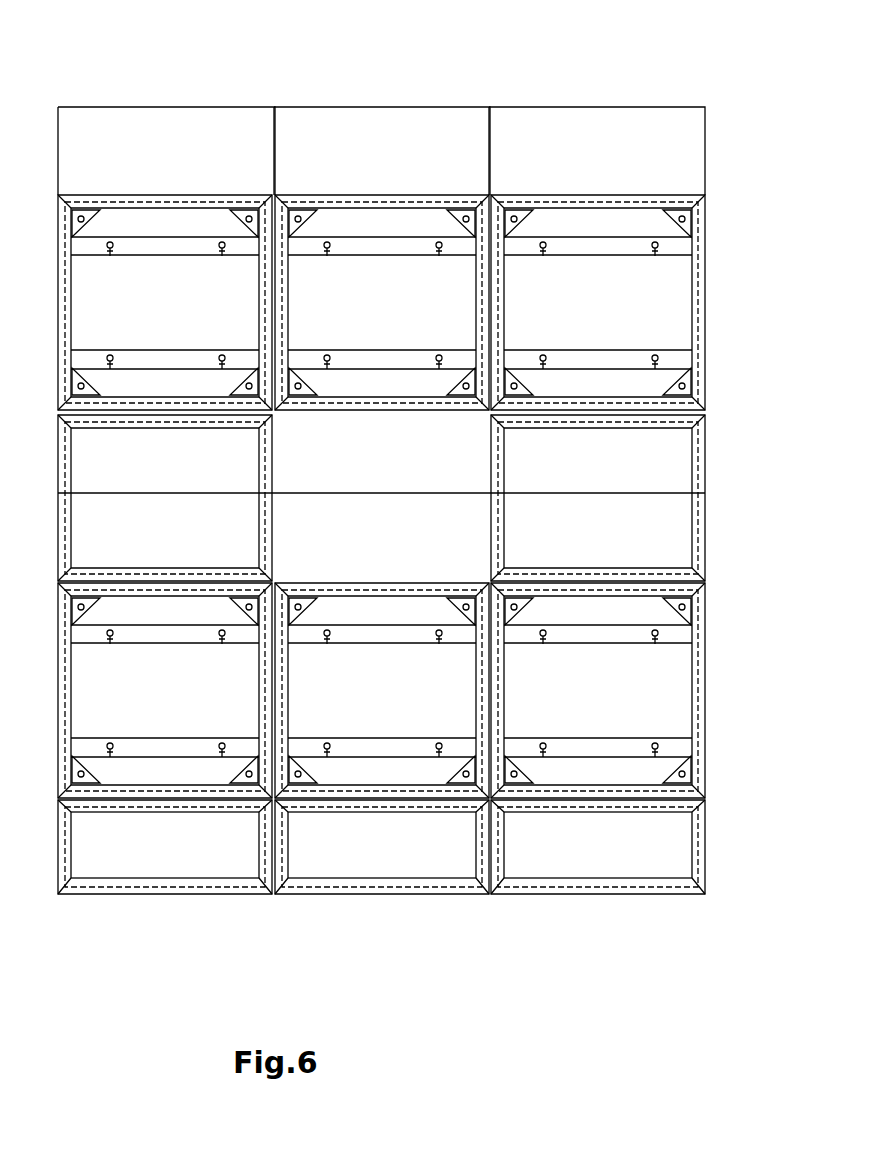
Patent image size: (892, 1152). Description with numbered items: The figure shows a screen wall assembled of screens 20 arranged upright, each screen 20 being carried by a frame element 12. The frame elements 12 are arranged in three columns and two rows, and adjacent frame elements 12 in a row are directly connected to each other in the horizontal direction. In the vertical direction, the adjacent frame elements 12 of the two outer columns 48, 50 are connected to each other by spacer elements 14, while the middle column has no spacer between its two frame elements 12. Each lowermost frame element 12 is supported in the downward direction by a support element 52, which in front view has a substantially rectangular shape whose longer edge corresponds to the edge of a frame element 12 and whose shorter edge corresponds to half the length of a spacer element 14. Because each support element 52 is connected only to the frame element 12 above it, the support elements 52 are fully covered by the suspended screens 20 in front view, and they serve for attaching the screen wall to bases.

The frame element 12 is at (72, 303).
The spacer element 14 is at (72, 529).
The screen 20 is at (100, 140).
The outer column 48 is at (170, 915).
The outer column 50 is at (641, 910).
The support element 52 is at (262, 845).